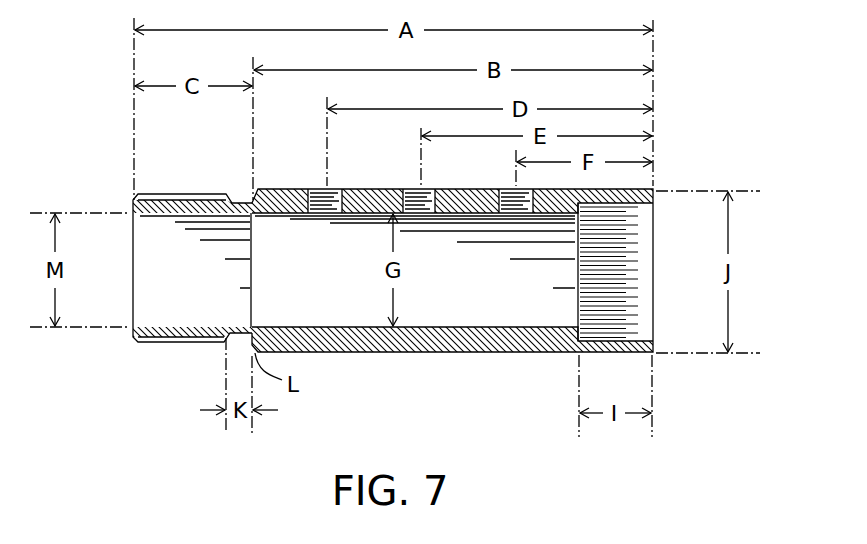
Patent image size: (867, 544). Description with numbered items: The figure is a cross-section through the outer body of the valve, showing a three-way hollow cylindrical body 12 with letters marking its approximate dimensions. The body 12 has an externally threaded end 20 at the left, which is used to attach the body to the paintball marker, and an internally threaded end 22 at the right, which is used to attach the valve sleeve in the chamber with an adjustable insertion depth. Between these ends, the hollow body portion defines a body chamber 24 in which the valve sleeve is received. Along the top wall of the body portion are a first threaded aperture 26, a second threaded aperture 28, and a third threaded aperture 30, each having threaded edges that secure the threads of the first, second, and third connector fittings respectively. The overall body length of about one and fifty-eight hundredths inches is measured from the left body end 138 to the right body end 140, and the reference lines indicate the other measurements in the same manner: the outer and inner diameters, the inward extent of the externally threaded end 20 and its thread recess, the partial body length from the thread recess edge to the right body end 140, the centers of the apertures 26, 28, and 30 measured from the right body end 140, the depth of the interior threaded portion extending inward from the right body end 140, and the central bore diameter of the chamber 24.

The hollow cylindrical body 12 is at (372, 351).
The externally threaded end 20 is at (190, 192).
The internally threaded end 22 is at (618, 340).
The body chamber 24 is at (466, 314).
The first threaded aperture 26 is at (330, 213).
The second threaded aperture 28 is at (420, 213).
The third threaded aperture 30 is at (523, 213).
The left body end 138 is at (133, 62).
The right body end 140 is at (655, 90).